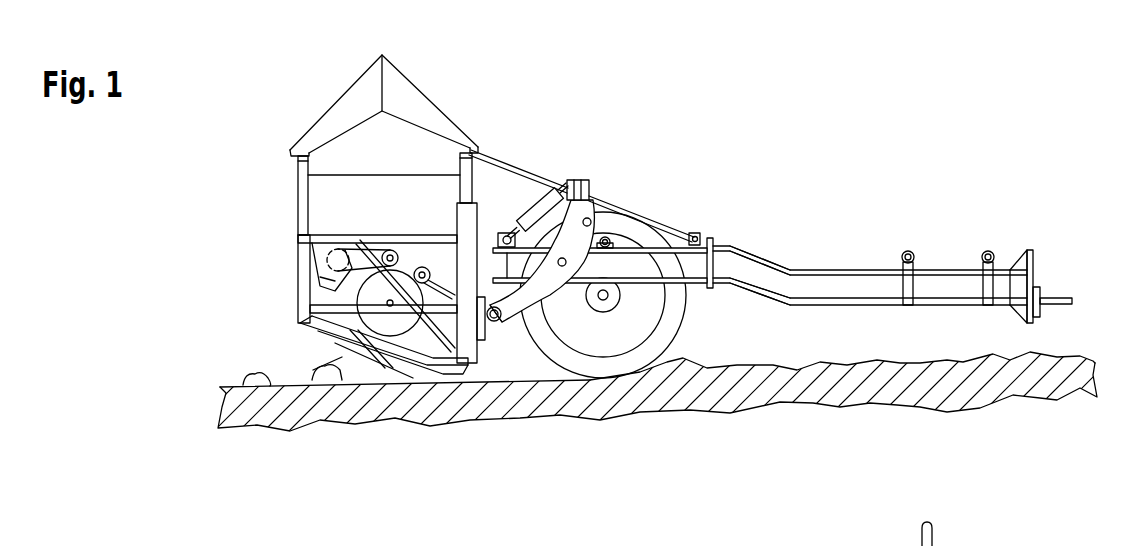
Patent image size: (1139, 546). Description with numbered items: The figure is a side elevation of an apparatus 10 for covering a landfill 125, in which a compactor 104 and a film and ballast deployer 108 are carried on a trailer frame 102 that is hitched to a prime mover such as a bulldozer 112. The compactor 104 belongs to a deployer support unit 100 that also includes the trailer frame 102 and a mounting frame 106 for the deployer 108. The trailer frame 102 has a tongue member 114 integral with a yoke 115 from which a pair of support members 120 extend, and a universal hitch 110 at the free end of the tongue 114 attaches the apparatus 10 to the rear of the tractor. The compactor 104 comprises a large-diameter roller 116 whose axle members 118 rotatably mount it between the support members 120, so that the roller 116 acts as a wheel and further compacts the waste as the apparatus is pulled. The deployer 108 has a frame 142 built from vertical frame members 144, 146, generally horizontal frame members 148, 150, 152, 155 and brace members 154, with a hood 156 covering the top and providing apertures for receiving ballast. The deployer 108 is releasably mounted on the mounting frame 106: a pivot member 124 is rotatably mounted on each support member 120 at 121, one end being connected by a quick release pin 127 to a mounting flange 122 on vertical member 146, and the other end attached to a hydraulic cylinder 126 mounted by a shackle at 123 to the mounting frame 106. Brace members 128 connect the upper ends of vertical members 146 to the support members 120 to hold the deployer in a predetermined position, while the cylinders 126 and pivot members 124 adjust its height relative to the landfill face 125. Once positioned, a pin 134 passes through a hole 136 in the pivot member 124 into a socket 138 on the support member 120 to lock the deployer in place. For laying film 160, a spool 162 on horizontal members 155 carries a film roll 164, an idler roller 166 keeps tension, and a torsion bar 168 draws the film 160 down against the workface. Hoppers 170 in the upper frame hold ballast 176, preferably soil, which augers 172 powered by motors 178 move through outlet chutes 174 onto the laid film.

The apparatus 10 is at (723, 94).
The deployer support unit 100 is at (763, 277).
The trailer frame 102 is at (922, 264).
The compactor 104 is at (631, 276).
The mounting frame 106 is at (465, 342).
The film and ballast deployer 108 is at (340, 282).
The universal hitch 110 is at (1060, 307).
The bulldozer 112 is at (1012, 545).
The tongue member 114 is at (876, 266).
The yoke 115 is at (738, 247).
The roller 116 is at (650, 336).
The axle members 118 is at (606, 302).
The support members 120 is at (688, 240).
The pivot mounting location 121 is at (562, 268).
The mounting flange 122 is at (480, 365).
The shackle mounting location 123 is at (508, 233).
The pivot member 124 is at (521, 322).
The landfill 125 is at (897, 362).
The hydraulic cylinder 126 is at (569, 185).
The quick release pin 127 is at (460, 393).
The brace members 128 is at (553, 174).
The pin 134 is at (642, 340).
The hole 136 is at (595, 178).
The socket 138 is at (642, 298).
The frame 142 is at (316, 348).
The vertical frame member 144 is at (316, 395).
The vertical frame member 146 is at (500, 162).
The horizontal frame member 148 is at (327, 340).
The horizontal frame member 150 is at (388, 370).
The horizontal frame member 152 is at (322, 234).
The brace members 154 is at (331, 421).
The horizontal frame member 155 is at (320, 308).
The hood 156 is at (408, 98).
The film 160 is at (222, 382).
The spool 162 is at (383, 325).
The film roll 164 is at (338, 380).
The idler roller 166 is at (430, 266).
The torsion bar 168 is at (318, 427).
The hopper 170 is at (322, 195).
The augers 172 is at (268, 253).
The outlet chutes 174 is at (322, 280).
The ballast 176 is at (243, 372).
The motors 178 is at (388, 250).